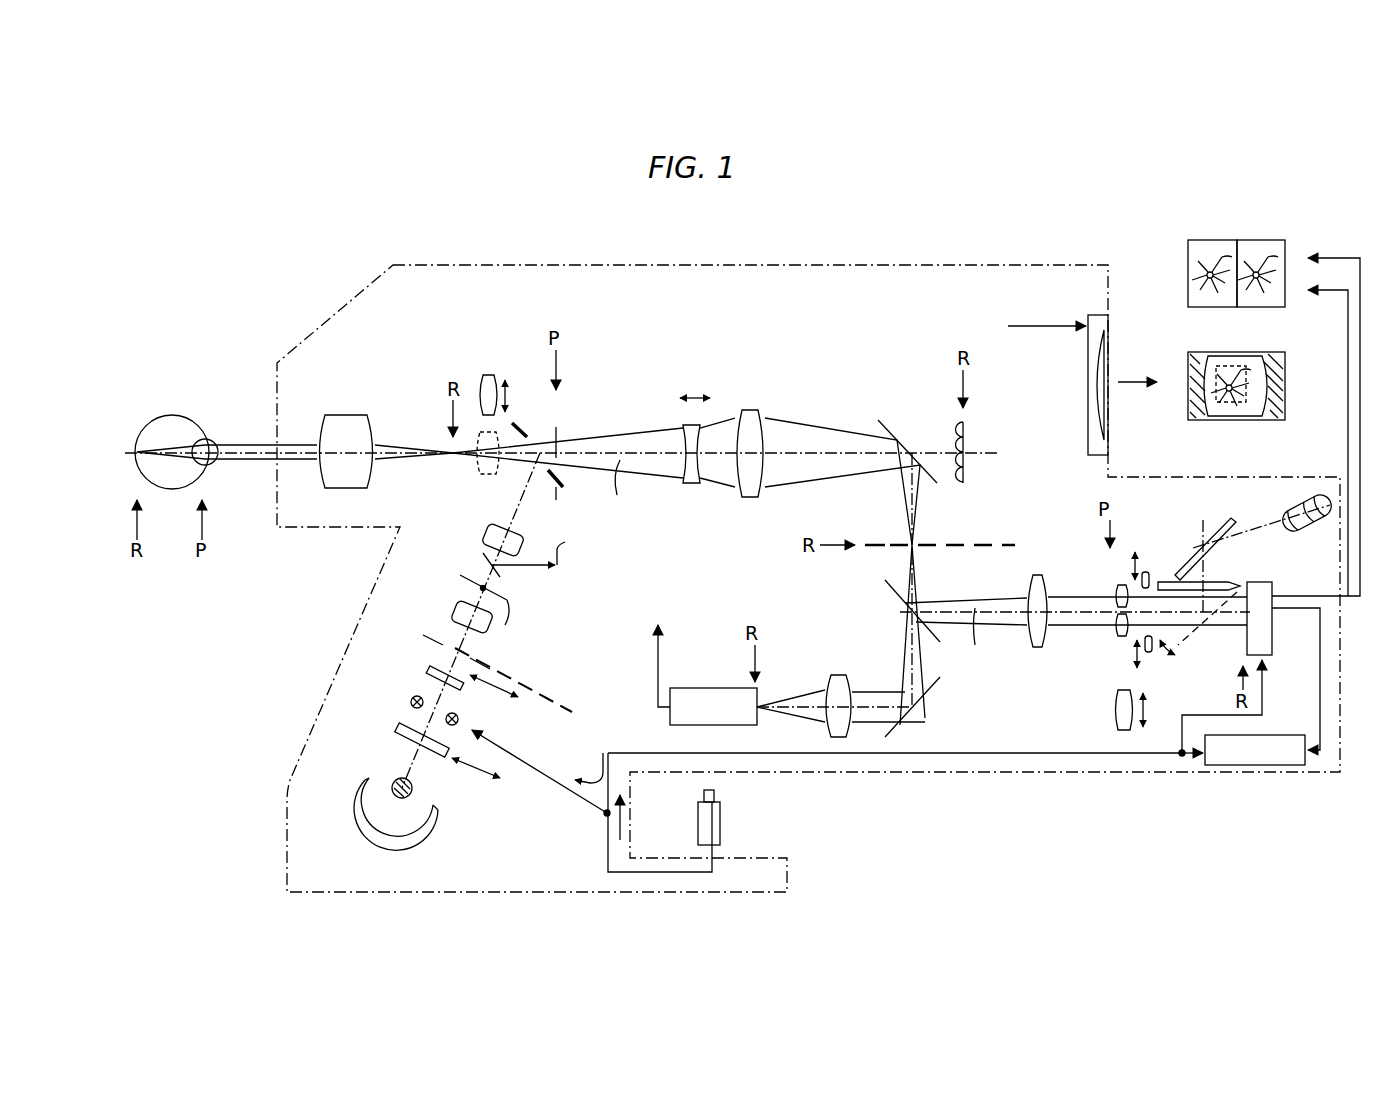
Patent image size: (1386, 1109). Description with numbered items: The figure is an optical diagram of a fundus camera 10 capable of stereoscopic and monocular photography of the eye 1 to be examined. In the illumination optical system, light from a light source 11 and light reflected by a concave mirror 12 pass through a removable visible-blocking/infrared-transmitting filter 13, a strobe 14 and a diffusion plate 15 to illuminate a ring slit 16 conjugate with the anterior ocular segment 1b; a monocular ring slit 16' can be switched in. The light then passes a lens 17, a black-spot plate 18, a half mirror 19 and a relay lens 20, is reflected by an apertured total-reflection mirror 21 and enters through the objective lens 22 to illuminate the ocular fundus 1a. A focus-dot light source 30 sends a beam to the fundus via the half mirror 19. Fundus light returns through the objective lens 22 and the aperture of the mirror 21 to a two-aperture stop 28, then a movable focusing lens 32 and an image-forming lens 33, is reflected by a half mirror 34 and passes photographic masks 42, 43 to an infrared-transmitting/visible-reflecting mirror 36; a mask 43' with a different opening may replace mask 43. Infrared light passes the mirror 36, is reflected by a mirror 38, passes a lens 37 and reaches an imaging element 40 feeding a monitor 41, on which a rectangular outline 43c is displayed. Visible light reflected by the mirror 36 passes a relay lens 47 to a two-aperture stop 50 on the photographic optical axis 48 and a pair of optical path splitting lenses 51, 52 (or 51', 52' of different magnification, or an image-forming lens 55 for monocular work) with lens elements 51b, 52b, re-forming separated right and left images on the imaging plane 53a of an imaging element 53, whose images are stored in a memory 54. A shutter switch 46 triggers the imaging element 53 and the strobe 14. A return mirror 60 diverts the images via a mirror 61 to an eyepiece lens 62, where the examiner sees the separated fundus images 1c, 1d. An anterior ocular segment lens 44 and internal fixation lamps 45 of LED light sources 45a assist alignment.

The eye to be examined 1 is at (148, 440).
The ocular fundus 1a is at (137, 456).
The anterior ocular segment 1b is at (214, 462).
The right ocular fundus image 1c is at (1210, 240).
The left ocular fundus image 1d is at (1258, 240).
The fundus camera 10 is at (268, 770).
The light source 11 is at (392, 780).
The concave mirror 12 is at (420, 822).
The visible-blocking/infrared-transmitting filter 13 is at (440, 755).
The strobe 14 is at (412, 697).
The diffusion plate 15 is at (430, 668).
The ring slit 16 is at (449, 630).
The monocular ring slit 16' is at (531, 680).
The lens 17 is at (470, 630).
The black-spot plate 18 is at (523, 619).
The half mirror 19 is at (485, 560).
The relay lens 20 is at (487, 535).
The apertured total-reflection mirror 21 is at (556, 500).
The objective lens 22 is at (372, 480).
The two-aperture stop 28 is at (556, 427).
The focus-dot light source 30 is at (546, 548).
The focusing lens 32 is at (692, 486).
The image-forming lens 33 is at (750, 410).
The half mirror 34 is at (897, 430).
The infrared-transmitting/visible-reflecting mirror 36 is at (888, 582).
The lens 37 is at (840, 675).
The mirror 38 is at (918, 697).
The imaging element 40 is at (722, 688).
The monitor 41 is at (1098, 312).
The photographic mask 42 is at (873, 543).
The photographic mask 43 is at (932, 573).
The photographic mask 43' is at (952, 520).
The rectangular outline 43c is at (1248, 376).
The anterior ocular segment lens 44 is at (490, 373).
The internal fixation lamps 45 is at (963, 437).
The LED light source 45a is at (963, 459).
The shutter switch 46 is at (718, 795).
The relay lens 47 is at (1032, 648).
The photographic optical axis 48 is at (617, 495).
The two-aperture stop 50 is at (1112, 585).
The optical path splitting lens 51 is at (1130, 552).
The optical path splitting lens 51' is at (1159, 548).
The lens 51b is at (1062, 597).
The optical path splitting lens 52 is at (1120, 651).
The optical path splitting lens 52' is at (1162, 668).
The lens 52b is at (1062, 627).
The imaging element 53 is at (1272, 588).
The imaging plane 53a is at (1247, 645).
The memory 54 is at (1278, 735).
The image-forming lens 55 is at (1114, 712).
The return mirror 60 is at (1218, 580).
The mirror 61 is at (1205, 540).
The eyepiece lens 62 is at (1297, 497).